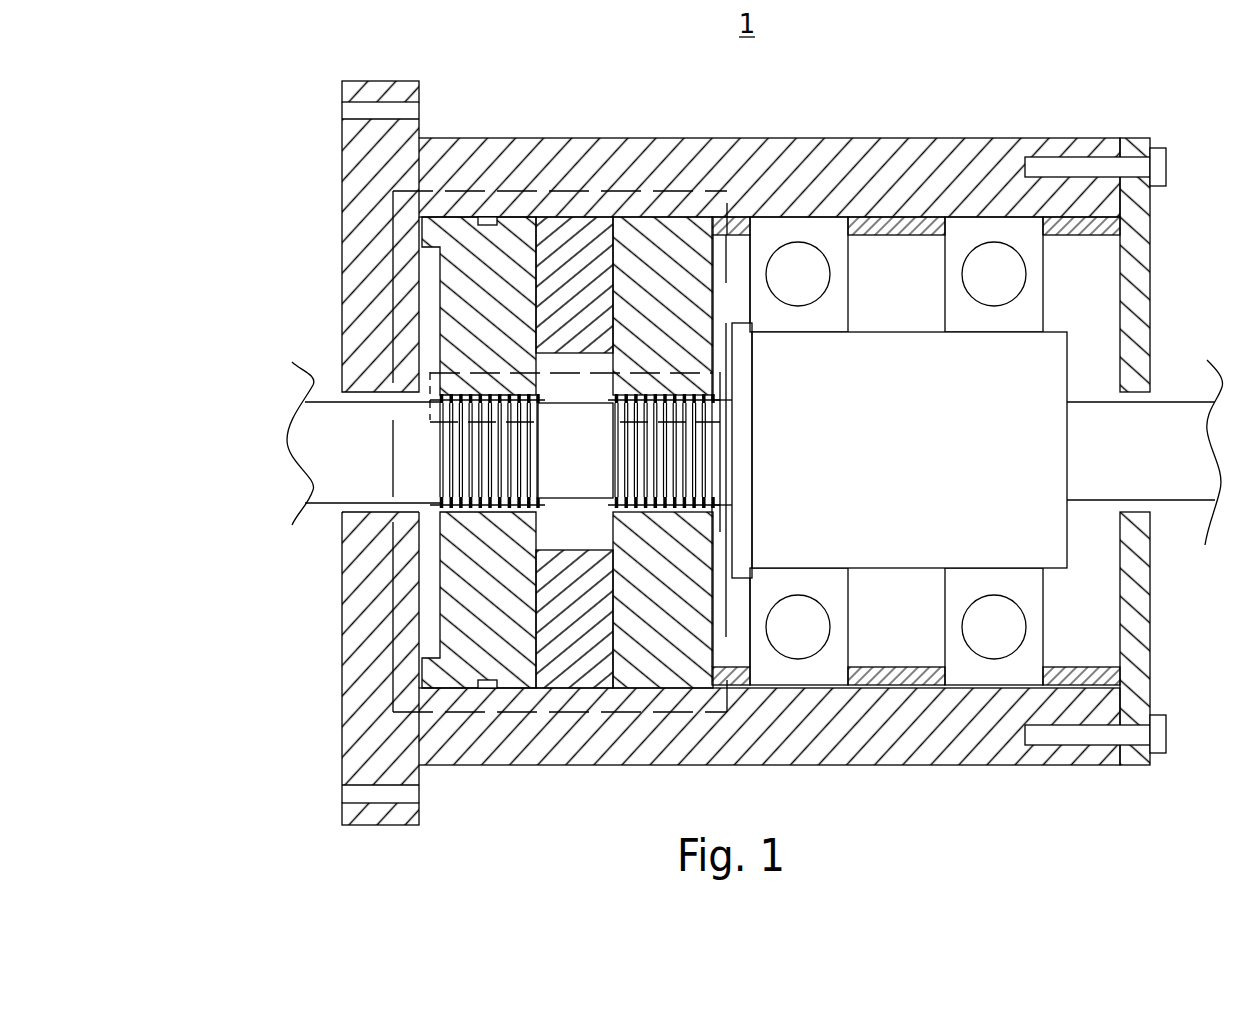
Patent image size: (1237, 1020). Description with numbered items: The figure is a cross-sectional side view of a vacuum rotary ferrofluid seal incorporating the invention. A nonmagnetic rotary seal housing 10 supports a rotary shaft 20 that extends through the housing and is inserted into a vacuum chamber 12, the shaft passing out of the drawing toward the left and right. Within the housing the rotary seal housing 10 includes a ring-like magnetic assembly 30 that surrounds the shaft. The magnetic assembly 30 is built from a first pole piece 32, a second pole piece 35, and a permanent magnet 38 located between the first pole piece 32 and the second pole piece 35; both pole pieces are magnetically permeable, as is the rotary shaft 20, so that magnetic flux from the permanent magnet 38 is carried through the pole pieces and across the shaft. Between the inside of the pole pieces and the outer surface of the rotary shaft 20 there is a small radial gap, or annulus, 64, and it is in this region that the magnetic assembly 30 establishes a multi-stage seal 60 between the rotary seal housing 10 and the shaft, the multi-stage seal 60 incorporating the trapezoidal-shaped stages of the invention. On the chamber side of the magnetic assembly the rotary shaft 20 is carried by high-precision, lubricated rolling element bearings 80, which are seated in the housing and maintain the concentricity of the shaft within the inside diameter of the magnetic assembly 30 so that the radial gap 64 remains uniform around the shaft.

The rotary seal housing 10 is at (779, 419).
The vacuum chamber 12 is at (243, 317).
The rotary shaft 20 is at (755, 452).
The magnetic assembly 30 is at (677, 188).
The first pole piece 32 is at (468, 293).
The second pole piece 35 is at (655, 252).
The permanent magnet 38 is at (563, 250).
The multi-stage seal 60 is at (583, 420).
The radial gap 64 is at (610, 397).
The rolling element bearings 80 is at (822, 317).